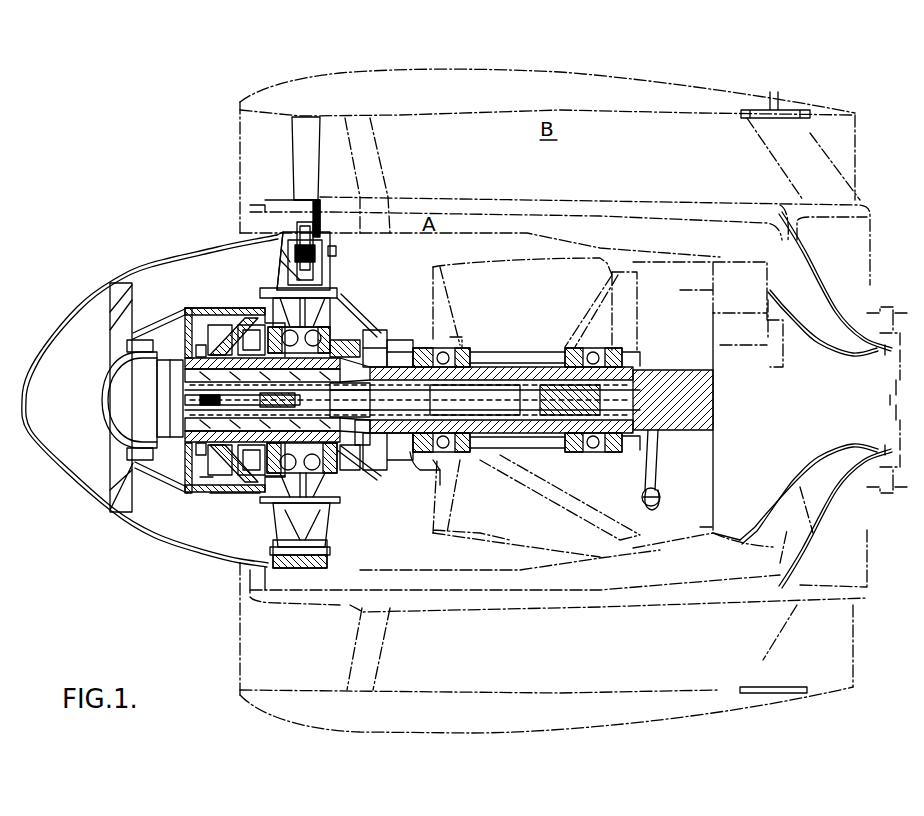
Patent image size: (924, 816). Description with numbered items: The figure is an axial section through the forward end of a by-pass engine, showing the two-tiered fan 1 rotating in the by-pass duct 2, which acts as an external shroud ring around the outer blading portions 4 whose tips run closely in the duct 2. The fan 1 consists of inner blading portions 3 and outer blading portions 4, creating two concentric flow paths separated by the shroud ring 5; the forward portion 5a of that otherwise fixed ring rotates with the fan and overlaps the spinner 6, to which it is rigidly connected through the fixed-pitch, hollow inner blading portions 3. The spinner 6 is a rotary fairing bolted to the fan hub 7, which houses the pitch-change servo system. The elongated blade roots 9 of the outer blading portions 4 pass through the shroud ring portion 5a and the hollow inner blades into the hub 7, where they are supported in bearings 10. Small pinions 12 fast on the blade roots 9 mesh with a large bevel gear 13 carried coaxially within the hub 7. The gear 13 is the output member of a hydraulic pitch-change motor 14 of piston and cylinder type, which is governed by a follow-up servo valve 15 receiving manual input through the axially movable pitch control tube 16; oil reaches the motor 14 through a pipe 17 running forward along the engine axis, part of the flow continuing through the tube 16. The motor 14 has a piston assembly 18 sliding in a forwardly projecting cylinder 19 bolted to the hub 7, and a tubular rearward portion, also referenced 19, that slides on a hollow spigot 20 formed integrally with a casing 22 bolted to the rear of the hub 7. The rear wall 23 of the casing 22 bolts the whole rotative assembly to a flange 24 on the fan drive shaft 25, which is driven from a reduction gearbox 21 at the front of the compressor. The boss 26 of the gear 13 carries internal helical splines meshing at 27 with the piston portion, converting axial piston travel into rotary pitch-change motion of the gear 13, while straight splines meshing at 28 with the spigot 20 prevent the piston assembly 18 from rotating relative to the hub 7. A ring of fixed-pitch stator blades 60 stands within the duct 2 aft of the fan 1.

The fan 1 is at (279, 196).
The by-pass duct 2 is at (240, 102).
The inner annular blading portions 3 is at (263, 226).
The outer annular blading portions 4 is at (292, 138).
The shroud ring 5 is at (555, 203).
The forward portion of shroud ring 5a is at (253, 203).
The spinner 6 is at (150, 267).
The fan hub 7 is at (337, 276).
The blade roots 9 is at (318, 205).
The bearings 10 is at (336, 252).
The pinions 12 is at (333, 283).
The bevel gear 13 is at (280, 281).
The pitch-change motor 14 is at (200, 473).
The follow-up servo valve 15 is at (193, 413).
The pitch control tube 16 is at (385, 440).
The pipe 17 is at (528, 397).
The piston assembly 18 is at (217, 493).
The cylinder 19 is at (201, 308).
The spigot 20 is at (355, 437).
The reduction gearbox 21 is at (735, 262).
The casing 22 is at (357, 333).
The rear wall 23 is at (363, 450).
The flange 24 is at (400, 335).
The fan drive shaft 25 is at (480, 427).
The boss 26 is at (345, 340).
The helical spline mesh 27 is at (390, 353).
The straight spline mesh 28 is at (348, 430).
The stator blades 60 is at (378, 148).